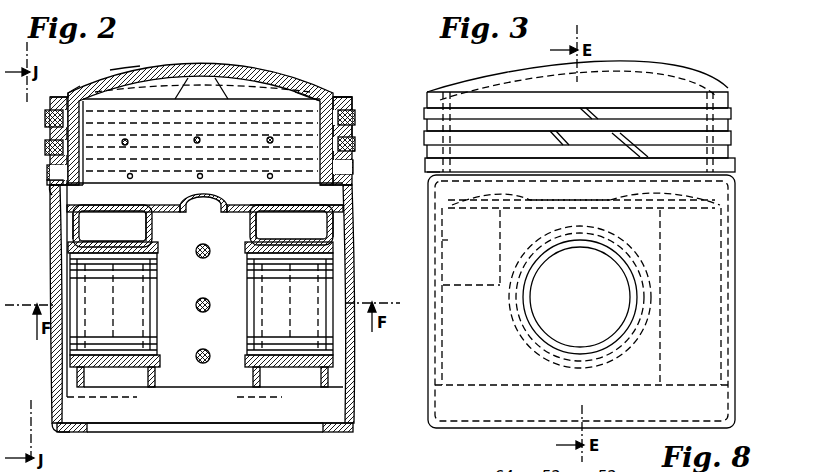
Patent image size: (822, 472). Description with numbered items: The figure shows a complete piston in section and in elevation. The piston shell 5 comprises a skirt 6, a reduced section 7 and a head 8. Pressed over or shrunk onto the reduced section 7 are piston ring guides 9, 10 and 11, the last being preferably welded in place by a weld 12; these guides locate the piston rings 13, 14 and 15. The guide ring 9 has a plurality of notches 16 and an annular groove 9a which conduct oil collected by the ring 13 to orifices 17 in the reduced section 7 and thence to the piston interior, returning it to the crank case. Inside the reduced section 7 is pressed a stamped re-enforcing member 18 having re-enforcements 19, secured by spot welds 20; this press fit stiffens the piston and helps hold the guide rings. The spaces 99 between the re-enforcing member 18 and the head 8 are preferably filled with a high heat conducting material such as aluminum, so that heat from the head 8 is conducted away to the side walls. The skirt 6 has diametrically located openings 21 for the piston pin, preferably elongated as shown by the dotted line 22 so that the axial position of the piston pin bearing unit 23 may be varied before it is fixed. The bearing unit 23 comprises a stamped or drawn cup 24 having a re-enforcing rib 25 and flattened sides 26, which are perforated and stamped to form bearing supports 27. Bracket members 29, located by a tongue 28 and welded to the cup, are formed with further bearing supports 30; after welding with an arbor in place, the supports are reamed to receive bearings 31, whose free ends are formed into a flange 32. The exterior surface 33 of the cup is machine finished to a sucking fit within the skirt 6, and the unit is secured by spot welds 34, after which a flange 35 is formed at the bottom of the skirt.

In FIG. 2, the piston shell 5 is at (70, 200).
In FIG. 3, the piston shell 5 is at (445, 190).
In FIG. 2, the skirt 6 is at (54, 381).
In FIG. 3, the skirt 6 is at (431, 381).
In FIG. 2, the reduced section 7 is at (337, 98).
In FIG. 3, the reduced section 7 is at (730, 98).
In FIG. 2, the head 8 is at (250, 73).
In FIG. 3, the head 8 is at (651, 76).
In FIG. 2, the piston ring guide 9 is at (356, 146).
In FIG. 3, the piston ring guide 9 is at (733, 147).
In FIG. 2, the annular groove 9a is at (379, 159).
In FIG. 3, the annular groove 9a is at (428, 174).
In FIG. 2, the piston ring guide 10 is at (353, 131).
In FIG. 3, the piston ring guide 10 is at (731, 128).
In FIG. 2, the piston ring guide 11 is at (353, 101).
In FIG. 2, the weld 12 is at (66, 95).
In FIG. 2, the piston ring 13 is at (48, 178).
In FIG. 3, the piston ring 13 is at (737, 165).
In FIG. 2, the piston ring 14 is at (46, 147).
In FIG. 3, the piston ring 14 is at (427, 142).
In FIG. 2, the piston ring 15 is at (46, 122).
In FIG. 3, the piston ring 15 is at (733, 113).
In FIG. 2, the notches 16 is at (49, 164).
In FIG. 2, the orifices 17 is at (129, 179).
In FIG. 2, the re-enforcing member 18 is at (126, 78).
In FIG. 3, the re-enforcing member 18 is at (444, 243).
In FIG. 2, the re-enforcements 19 is at (168, 84).
In FIG. 2, the spot welds 20 is at (78, 148).
In FIG. 2, the openings 21 is at (61, 282).
In FIG. 3, the openings 21 is at (540, 344).
In FIG. 3, the elongated hole 22 is at (536, 252).
In FIG. 2, the piston pin bearing unit 23 is at (74, 229).
In FIG. 2, the cup 24 is at (300, 215).
In FIG. 2, the re-enforcing rib 25 is at (184, 199).
In FIG. 3, the re-enforcing rib 25 is at (512, 199).
In FIG. 2, the flattened sides 26 is at (70, 247).
In FIG. 2, the bearing supports 27 is at (100, 244).
In FIG. 2, the tongue 28 is at (258, 209).
In FIG. 3, the tongue 28 is at (620, 198).
In FIG. 2, the bracket members 29 is at (153, 232).
In FIG. 3, the bracket members 29 is at (500, 286).
In FIG. 2, the bearing supports 30 is at (128, 368).
In FIG. 2, the bearings 31 is at (96, 341).
In FIG. 3, the bearings 31 is at (532, 324).
In FIG. 2, the flange 32 is at (68, 251).
In FIG. 3, the exterior surface 33 is at (432, 334).
In FIG. 2, the spot welds 34 is at (201, 297).
In FIG. 2, the flange 35 is at (78, 434).
In FIG. 3, the flange 35 is at (462, 429).
In FIG. 2, the spaces 99 is at (148, 92).